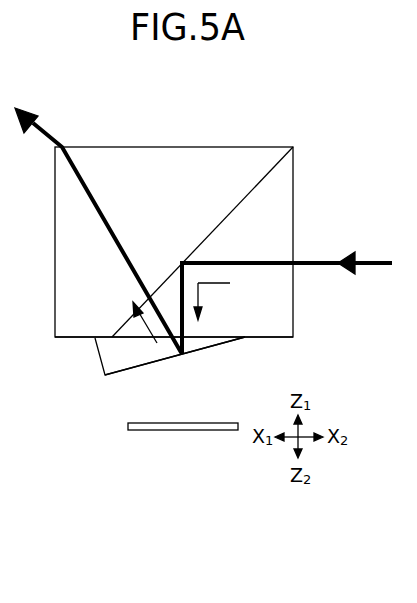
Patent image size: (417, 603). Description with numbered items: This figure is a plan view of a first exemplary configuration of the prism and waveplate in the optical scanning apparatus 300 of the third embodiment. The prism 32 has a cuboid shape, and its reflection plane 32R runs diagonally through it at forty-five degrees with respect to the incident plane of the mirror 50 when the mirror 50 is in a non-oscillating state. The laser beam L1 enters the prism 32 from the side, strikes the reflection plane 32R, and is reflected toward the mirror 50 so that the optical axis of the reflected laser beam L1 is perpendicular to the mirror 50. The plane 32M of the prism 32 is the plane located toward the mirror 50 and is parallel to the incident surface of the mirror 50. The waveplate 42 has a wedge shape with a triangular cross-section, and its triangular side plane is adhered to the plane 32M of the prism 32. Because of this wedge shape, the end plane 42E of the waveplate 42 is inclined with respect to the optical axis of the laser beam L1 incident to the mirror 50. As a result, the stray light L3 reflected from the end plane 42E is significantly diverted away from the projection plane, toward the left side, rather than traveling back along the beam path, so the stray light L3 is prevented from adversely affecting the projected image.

The optical scanning apparatus 300 is at (60, 70).
The prism 32 is at (295, 163).
The reflection plane 32R is at (258, 183).
The plane 32M is at (267, 338).
The waveplate 42 is at (198, 344).
The end plane 42E is at (122, 372).
The mirror 50 is at (127, 426).
The laser beam L1 is at (308, 262).
The stray light L3 is at (93, 197).